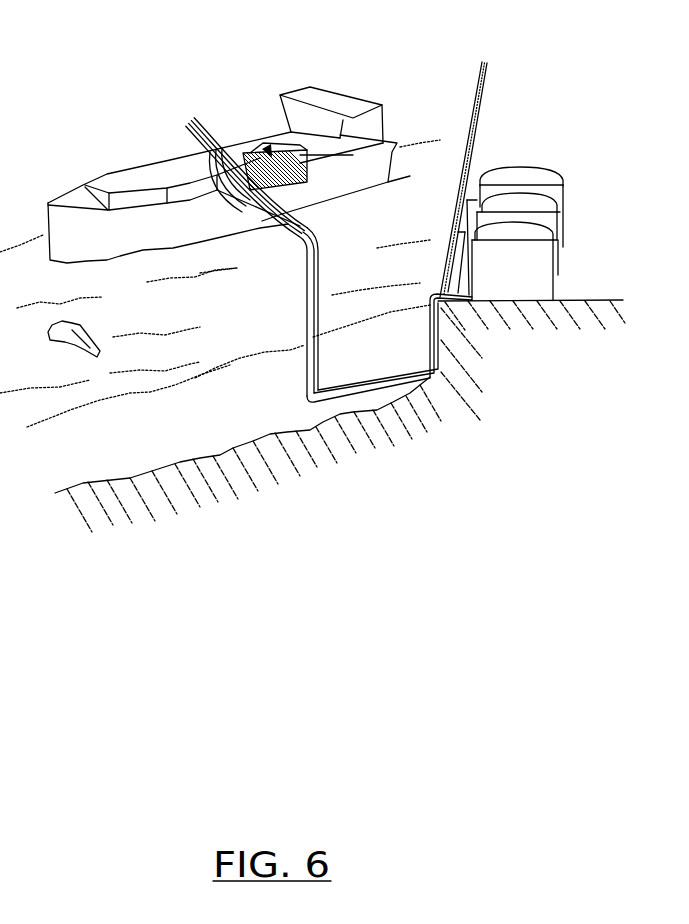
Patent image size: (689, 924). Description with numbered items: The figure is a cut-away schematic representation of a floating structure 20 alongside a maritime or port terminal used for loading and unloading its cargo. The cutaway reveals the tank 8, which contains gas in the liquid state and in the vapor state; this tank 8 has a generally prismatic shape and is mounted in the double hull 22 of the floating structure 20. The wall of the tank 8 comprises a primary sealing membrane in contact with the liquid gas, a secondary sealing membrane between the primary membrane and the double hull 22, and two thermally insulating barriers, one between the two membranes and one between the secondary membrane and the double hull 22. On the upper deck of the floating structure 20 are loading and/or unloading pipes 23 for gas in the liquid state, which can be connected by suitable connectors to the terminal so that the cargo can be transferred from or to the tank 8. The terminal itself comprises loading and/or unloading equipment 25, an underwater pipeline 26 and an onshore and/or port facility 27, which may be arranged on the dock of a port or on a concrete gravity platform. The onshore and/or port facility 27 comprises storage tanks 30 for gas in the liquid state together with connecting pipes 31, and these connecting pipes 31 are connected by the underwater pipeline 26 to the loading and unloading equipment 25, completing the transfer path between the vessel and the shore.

The floating structure 20 is at (343, 94).
The tank 8 is at (268, 147).
The double hull 22 is at (310, 174).
The loading and/or unloading pipes 23 is at (198, 137).
The loading and/or unloading equipment 25 is at (300, 304).
The underwater pipeline 26 is at (375, 383).
The onshore and/or port facility 27 is at (529, 150).
The storage tanks 30 is at (489, 169).
The connecting pipes 31 is at (463, 222).